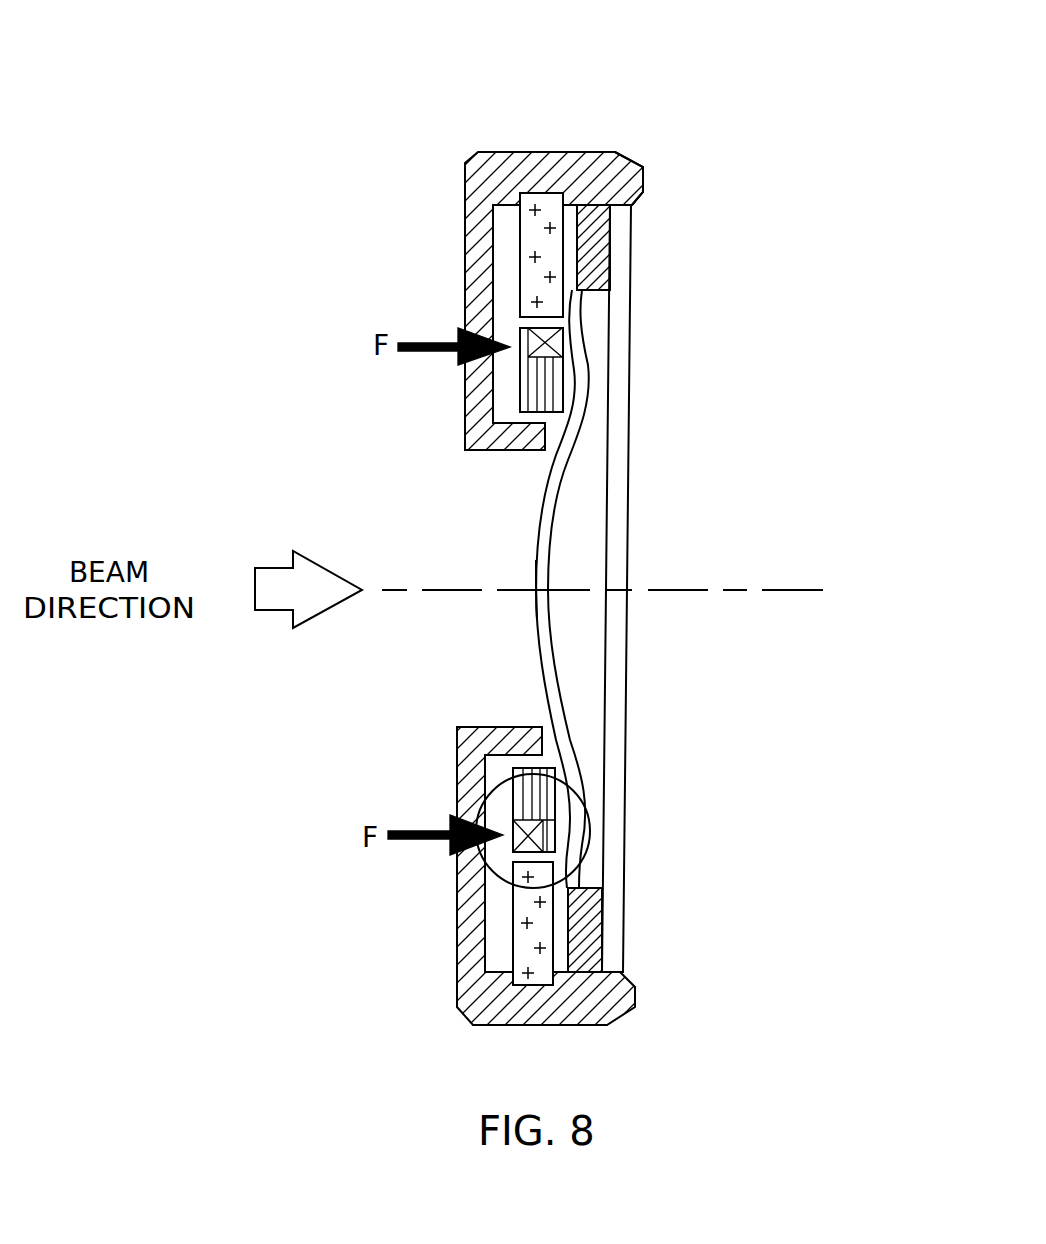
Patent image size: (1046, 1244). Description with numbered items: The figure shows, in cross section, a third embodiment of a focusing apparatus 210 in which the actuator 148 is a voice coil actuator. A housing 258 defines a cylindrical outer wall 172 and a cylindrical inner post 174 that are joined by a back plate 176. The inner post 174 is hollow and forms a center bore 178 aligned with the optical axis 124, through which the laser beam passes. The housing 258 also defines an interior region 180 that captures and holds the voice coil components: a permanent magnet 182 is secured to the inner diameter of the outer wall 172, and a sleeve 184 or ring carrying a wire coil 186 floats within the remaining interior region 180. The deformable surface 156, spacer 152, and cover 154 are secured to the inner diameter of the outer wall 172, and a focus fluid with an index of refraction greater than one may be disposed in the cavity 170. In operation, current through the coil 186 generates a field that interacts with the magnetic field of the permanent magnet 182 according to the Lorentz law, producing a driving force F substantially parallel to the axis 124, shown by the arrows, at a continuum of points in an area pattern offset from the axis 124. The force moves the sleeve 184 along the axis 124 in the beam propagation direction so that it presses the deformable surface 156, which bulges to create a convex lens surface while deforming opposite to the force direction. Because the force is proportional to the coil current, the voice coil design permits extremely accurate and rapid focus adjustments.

The focusing apparatus 210 is at (458, 82).
The cylindrical outer wall 172 is at (545, 152).
The housing 258 is at (637, 160).
The permanent magnet 182 is at (530, 228).
The back plate 176 is at (465, 255).
The spacer 152 is at (603, 248).
The cover 154 is at (633, 333).
The wire coil 186 is at (545, 357).
The cylindrical inner post 174 is at (507, 452).
The cavity 170 is at (580, 548).
The optical axis 124 is at (777, 593).
The center bore 178 is at (487, 639).
The deformable surface 156 is at (545, 663).
The sleeve 184 is at (520, 793).
The actuator 148 is at (590, 826).
The interior region 180 is at (497, 930).